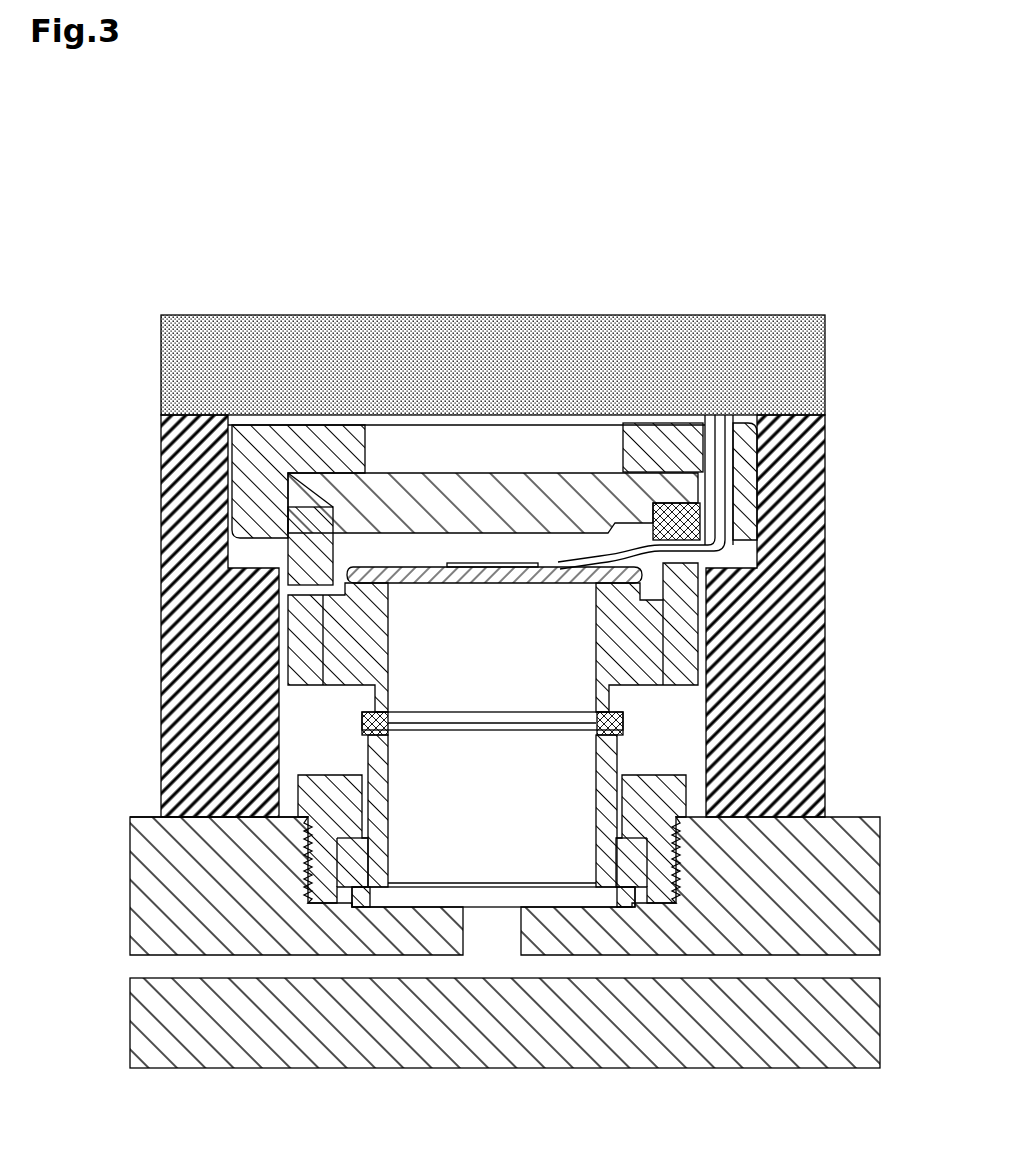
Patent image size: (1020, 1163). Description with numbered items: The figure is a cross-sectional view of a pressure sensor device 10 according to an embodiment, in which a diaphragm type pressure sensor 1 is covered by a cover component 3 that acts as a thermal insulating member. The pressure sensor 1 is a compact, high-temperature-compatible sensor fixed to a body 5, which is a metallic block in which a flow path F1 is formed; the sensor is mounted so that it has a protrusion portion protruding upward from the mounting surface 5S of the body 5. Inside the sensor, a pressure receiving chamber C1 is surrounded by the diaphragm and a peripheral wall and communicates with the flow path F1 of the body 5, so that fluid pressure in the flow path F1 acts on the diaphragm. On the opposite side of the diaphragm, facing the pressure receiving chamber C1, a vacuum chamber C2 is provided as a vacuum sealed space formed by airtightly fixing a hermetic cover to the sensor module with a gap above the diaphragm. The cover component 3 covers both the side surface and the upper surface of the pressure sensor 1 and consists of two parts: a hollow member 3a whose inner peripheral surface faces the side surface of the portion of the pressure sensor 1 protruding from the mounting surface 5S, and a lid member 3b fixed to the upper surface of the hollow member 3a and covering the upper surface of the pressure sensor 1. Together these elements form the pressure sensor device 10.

The pressure sensor device 10 is at (513, 658).
The cover component 3 is at (508, 527).
The hollow member 3a is at (812, 608).
The lid member 3b is at (532, 365).
The pressure sensor 1 is at (604, 647).
The body 5 is at (411, 1040).
The mounting surface 5S is at (147, 815).
The flow path F1 is at (606, 968).
The pressure receiving chamber C1 is at (424, 619).
The vacuum chamber C2 is at (424, 559).